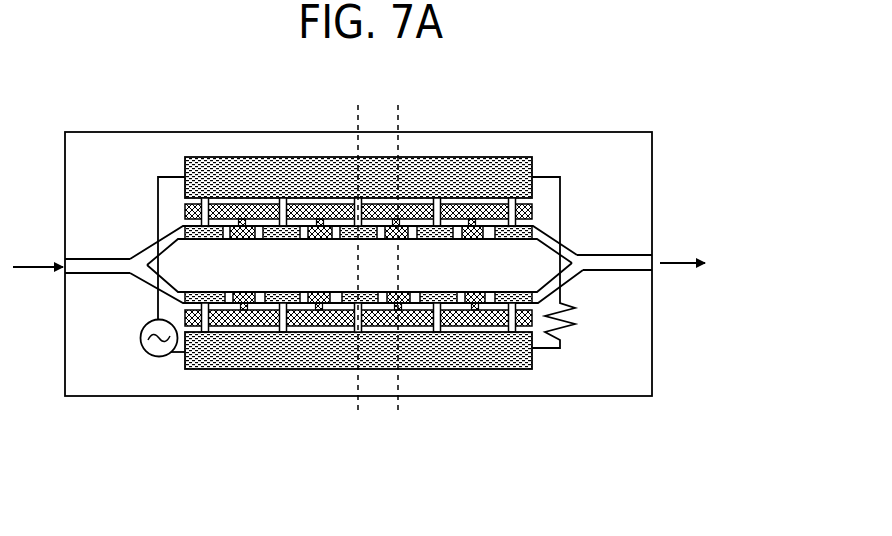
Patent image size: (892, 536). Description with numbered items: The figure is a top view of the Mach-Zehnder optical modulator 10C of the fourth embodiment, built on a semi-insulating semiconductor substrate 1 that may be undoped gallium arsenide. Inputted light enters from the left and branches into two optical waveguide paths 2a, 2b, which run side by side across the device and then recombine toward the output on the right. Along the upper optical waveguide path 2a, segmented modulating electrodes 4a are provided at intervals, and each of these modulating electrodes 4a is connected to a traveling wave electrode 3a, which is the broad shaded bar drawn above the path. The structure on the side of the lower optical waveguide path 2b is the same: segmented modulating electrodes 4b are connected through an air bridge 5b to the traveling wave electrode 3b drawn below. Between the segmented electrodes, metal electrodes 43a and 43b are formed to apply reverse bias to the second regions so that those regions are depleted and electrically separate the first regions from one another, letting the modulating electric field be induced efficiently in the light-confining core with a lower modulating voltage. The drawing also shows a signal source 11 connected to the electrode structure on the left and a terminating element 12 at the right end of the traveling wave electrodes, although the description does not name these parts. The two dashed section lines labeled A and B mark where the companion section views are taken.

The optical modulator 10C is at (175, 120).
The semi-insulating semiconductor substrate 1 is at (585, 380).
The optical waveguide path 2a is at (172, 238).
The optical waveguide path 2b is at (170, 295).
The traveling wave electrode 3a is at (478, 163).
The traveling wave electrode 3b is at (482, 363).
The modulating electrode 4a is at (355, 210).
The modulating electrode 4b is at (357, 305).
The air bridge 5b is at (357, 210).
The metal electrode 43a is at (410, 210).
The metal electrode 43b is at (403, 305).
The signal source 11 is at (145, 353).
The terminating resistor 12 is at (570, 331).